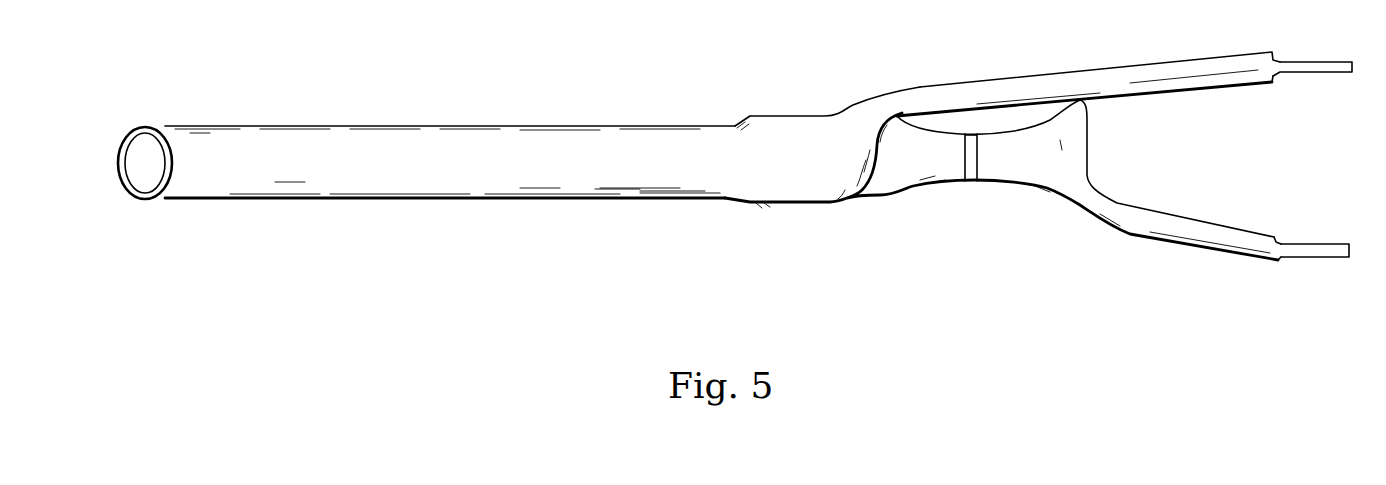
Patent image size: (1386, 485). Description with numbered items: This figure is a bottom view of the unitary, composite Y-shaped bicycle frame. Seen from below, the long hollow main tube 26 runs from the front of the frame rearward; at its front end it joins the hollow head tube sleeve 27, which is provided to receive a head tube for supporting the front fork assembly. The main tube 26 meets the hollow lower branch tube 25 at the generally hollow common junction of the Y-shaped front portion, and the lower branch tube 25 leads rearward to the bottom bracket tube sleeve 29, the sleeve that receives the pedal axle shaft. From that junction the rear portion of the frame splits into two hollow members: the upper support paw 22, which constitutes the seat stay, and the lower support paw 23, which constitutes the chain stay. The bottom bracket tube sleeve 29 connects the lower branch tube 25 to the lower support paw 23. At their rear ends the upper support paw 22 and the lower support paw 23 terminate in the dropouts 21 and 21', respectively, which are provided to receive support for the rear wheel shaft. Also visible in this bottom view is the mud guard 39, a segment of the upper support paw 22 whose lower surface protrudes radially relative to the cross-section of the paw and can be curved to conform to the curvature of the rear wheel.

The dropout 21 is at (1315, 279).
The dropout 21' is at (1312, 43).
The upper support paw 22 is at (1147, 237).
The lower support paw 23 is at (1120, 70).
The lower branch tube 25 is at (692, 187).
The main tube 26 is at (400, 197).
The head tube sleeve 27 is at (148, 199).
The bottom bracket tube sleeve 29 is at (790, 203).
The mud guard 39 is at (960, 182).